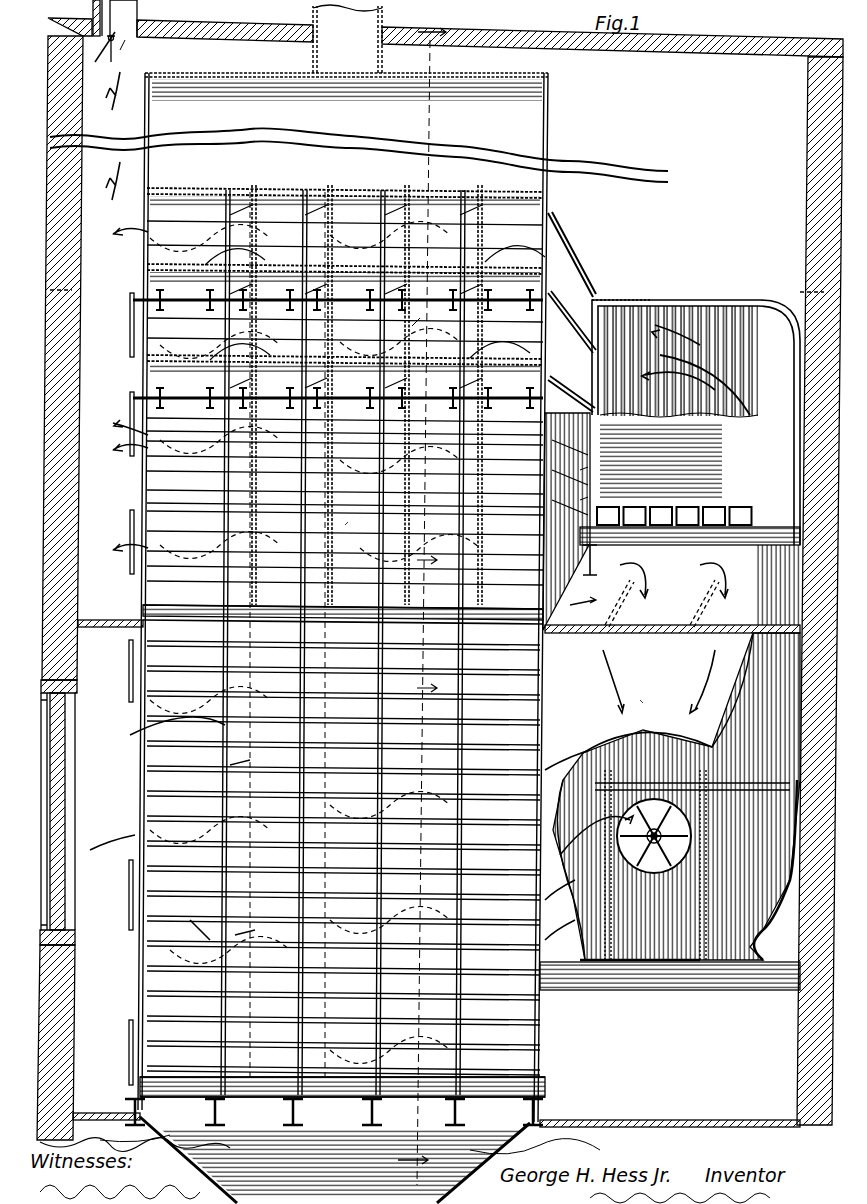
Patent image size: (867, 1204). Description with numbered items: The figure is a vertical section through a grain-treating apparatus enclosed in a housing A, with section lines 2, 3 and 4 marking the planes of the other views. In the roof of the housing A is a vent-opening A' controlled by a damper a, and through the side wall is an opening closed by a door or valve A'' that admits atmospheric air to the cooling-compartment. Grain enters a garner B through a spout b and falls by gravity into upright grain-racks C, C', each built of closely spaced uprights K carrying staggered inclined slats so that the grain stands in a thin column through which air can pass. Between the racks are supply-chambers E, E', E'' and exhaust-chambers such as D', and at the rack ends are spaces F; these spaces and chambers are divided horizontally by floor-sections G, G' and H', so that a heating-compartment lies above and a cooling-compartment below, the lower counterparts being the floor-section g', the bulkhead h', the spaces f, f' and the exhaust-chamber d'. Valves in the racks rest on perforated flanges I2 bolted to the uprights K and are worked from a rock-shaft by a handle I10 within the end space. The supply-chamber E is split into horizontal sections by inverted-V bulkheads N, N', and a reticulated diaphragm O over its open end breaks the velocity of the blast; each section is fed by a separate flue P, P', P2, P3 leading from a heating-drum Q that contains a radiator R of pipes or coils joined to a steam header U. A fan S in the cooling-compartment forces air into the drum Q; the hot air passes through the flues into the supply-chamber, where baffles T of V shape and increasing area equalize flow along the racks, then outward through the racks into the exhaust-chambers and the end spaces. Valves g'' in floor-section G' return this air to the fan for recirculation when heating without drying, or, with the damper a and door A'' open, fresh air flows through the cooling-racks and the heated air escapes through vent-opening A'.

The housing A is at (440, 585).
The damper a is at (114, 100).
The vent-opening A' is at (144, 47).
The door or valve A'' is at (75, 812).
The spout b is at (347, 39).
The garner B is at (343, 597).
The section line 2- 2 is at (422, 597).
The section line 3- 3 is at (443, 294).
The section line 4- 4 is at (427, 625).
The grain-rack C is at (315, 386).
The grain-rack C' is at (340, 858).
The baffles T is at (250, 190).
The uprights K is at (546, 1022).
The supply-chamber E is at (338, 317).
The supply-chamber E' is at (356, 296).
The supply-chamber E'' is at (661, 379).
The bulkhead N is at (375, 250).
The bulkhead N' is at (370, 348).
The handle I10 is at (128, 315).
The flanges I2 is at (425, 320).
The end space F is at (116, 483).
The floor-section H' is at (343, 599).
The floor-section G is at (110, 606).
The floor-section G' is at (672, 589).
The floor-section g' is at (436, 1139).
The valves g'' is at (670, 675).
The space f is at (114, 862).
The space f' is at (646, 686).
The exhaust-chamber d' is at (333, 846).
The exhaust-chamber D' is at (338, 513).
The reticulated diaphragm O is at (565, 246).
The hot-air flue P is at (582, 305).
The hot-air flue P' is at (571, 383).
The hot-air flue P2 is at (566, 521).
The hot-air flue P3 is at (568, 496).
The heating-drum Q is at (705, 292).
The radiator R is at (647, 295).
The header U is at (712, 510).
The fan S is at (670, 811).
The floor-section h' is at (345, 1083).